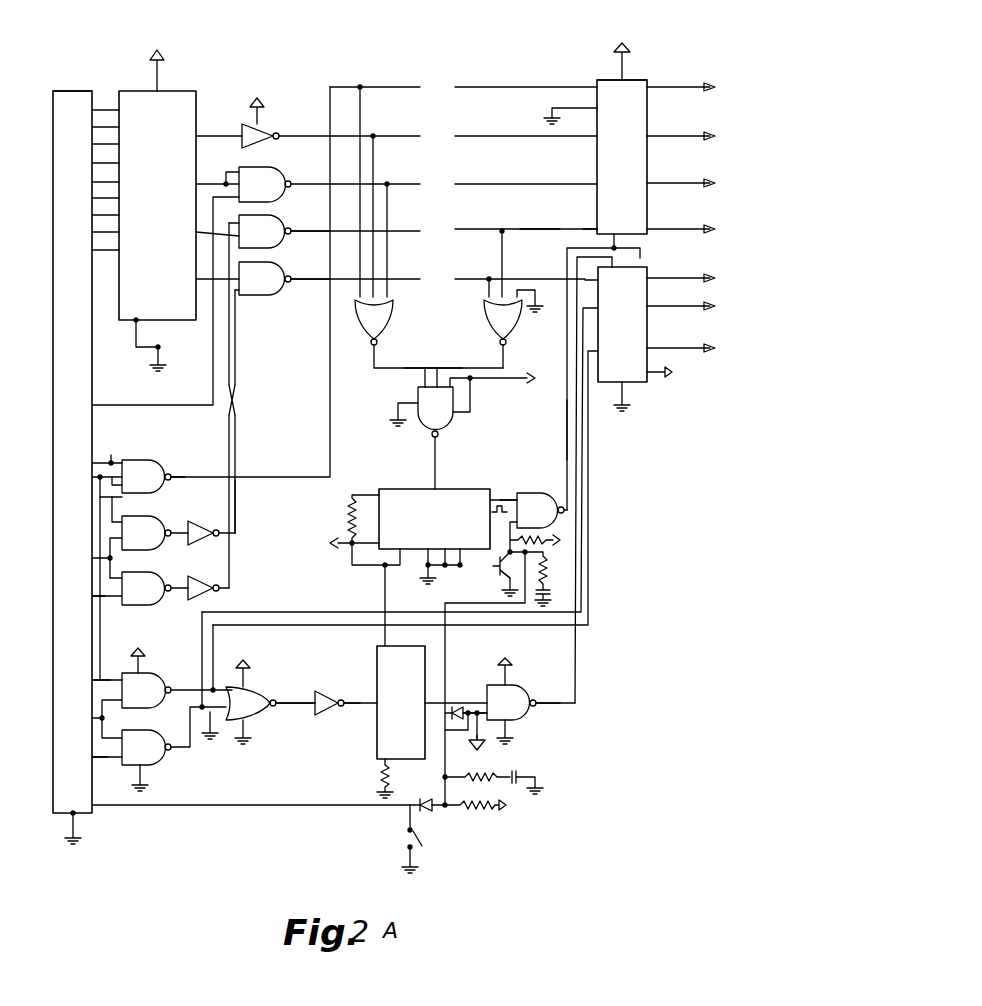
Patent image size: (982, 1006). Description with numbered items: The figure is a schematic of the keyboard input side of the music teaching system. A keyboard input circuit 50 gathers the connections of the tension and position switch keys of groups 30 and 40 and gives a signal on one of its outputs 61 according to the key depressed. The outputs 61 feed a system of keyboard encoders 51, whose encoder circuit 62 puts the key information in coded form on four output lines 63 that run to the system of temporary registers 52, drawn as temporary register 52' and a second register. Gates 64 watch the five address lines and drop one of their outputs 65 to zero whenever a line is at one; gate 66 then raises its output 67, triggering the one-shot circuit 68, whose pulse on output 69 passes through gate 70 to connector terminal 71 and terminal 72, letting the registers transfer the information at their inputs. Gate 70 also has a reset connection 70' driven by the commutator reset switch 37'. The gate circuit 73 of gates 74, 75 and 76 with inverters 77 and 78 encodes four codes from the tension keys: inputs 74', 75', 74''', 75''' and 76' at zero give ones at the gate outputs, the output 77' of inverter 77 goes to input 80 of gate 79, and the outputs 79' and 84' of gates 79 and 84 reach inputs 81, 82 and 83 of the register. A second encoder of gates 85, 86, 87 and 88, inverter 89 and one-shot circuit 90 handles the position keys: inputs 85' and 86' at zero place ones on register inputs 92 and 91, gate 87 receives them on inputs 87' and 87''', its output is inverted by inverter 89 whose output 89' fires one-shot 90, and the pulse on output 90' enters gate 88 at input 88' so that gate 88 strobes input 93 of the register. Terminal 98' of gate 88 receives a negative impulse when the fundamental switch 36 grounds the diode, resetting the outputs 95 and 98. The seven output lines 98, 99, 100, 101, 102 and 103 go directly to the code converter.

The group of position switch keys 30 is at (76, 703).
The position fundamental F switch 36 is at (426, 850).
The commutator reset switch 37' is at (486, 583).
The group of tension switch keys 40 is at (76, 249).
The keyboard input circuit 50 is at (64, 92).
The system of keyboard encoders 51 is at (184, 812).
The system of temporary registers 52 is at (565, 49).
The temporary register 52' is at (599, 131).
The output of keyboard circuit 61 is at (105, 144).
The encoder circuit 62 is at (189, 91).
The encoder output lines 63 is at (203, 148).
The gates 64 is at (483, 312).
The gate outputs 65 is at (462, 368).
The gate 66 is at (455, 417).
The output of gate 66 67 is at (437, 455).
The one-shot circuit 68 is at (404, 500).
The output of one-shot circuit 69 is at (523, 500).
The gate 70 is at (541, 515).
The reset connection 70' is at (493, 573).
The connector terminal 71 is at (603, 242).
The terminal 72 is at (640, 258).
The gate circuit 73 is at (150, 437).
The gate 74 is at (180, 463).
The input of gate 74 74' is at (105, 440).
The input terminal of gate 74 74''' is at (80, 578).
The gate 75 is at (140, 537).
The input of gate 75 75' is at (136, 502).
The input of gate 75 75''' is at (85, 558).
The gate 76 is at (134, 596).
The input of gate 76 76' is at (86, 589).
The inverter 77 is at (211, 516).
The output of inverter 77 77' is at (253, 506).
The inverter 78 is at (200, 594).
The gate 79 is at (264, 291).
The output of gate 79 79' is at (310, 293).
The input of gate 79 80 is at (237, 322).
The register input 81 is at (586, 282).
The input of temporary register 52' 82 is at (512, 87).
The input of register 52' 83 is at (550, 229).
The gate 84 is at (265, 203).
The output of gate 84 84' is at (310, 242).
The gate 85 is at (134, 748).
The input of gate 85 85' is at (104, 775).
The gate 86 is at (134, 685).
The input of gate 86 86' is at (106, 664).
The gate 87 is at (258, 678).
The input of gate 87 87' is at (230, 672).
The input of gate 87 87''' is at (234, 740).
The gate 88 is at (538, 692).
The input of gate 88 88' is at (472, 686).
The inverter 89 is at (341, 719).
The output of inverter 89 89' is at (350, 683).
The one-shot circuit 90 is at (384, 681).
The output terminal of one-shot 90 90' is at (456, 677).
The input of register 52" 91 is at (588, 425).
The input of register 52" 92 is at (581, 343).
The input of register 52' 93 is at (567, 249).
The register output line 95 is at (686, 348).
The register output line 98 is at (693, 300).
The terminal of gate 88 98' is at (470, 750).
The output line 99 is at (700, 278).
The output line 100 is at (684, 229).
The output line 101 is at (688, 183).
The output line 102 is at (694, 136).
The output line 103 is at (688, 87).